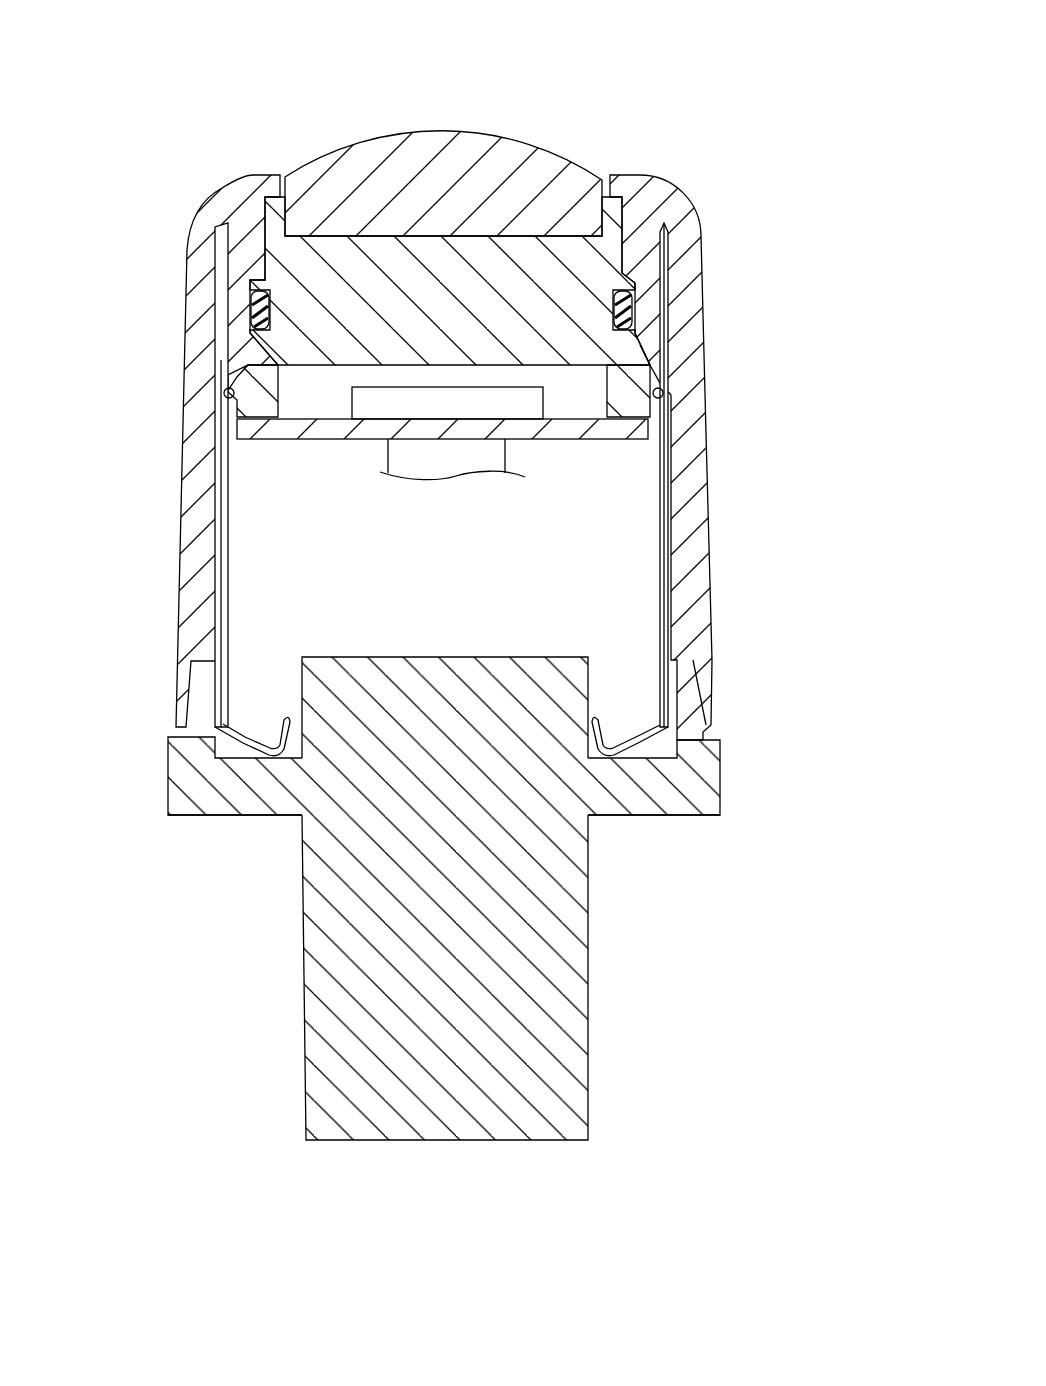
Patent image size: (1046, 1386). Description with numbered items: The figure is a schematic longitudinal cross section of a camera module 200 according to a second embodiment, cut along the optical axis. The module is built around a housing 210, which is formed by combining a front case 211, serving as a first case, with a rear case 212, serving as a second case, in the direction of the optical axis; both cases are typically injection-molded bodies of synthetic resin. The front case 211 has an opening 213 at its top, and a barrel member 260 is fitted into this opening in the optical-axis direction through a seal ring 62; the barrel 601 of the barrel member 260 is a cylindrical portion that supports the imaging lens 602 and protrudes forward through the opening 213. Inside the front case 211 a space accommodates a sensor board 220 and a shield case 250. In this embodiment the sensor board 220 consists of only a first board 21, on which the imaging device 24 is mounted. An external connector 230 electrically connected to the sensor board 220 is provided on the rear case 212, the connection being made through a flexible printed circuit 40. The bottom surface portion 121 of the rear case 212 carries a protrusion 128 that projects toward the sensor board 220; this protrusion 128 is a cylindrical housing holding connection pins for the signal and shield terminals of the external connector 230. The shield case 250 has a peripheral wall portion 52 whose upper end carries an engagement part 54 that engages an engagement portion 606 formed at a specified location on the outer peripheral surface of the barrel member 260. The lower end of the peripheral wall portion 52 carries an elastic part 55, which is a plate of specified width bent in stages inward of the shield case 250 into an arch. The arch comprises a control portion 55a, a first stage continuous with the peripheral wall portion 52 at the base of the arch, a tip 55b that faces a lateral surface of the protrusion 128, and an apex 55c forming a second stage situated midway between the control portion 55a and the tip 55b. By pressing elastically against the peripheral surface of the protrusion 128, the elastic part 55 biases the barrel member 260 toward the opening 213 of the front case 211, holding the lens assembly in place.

The camera module 200 is at (729, 106).
The housing 210 is at (76, 600).
The front case 211 is at (176, 630).
The rear case 212 is at (168, 777).
The opening 213 is at (637, 225).
The bottom surface portion 121 is at (253, 818).
The protrusion 128 is at (553, 656).
The external connector 230 is at (446, 1112).
The barrel member 260 is at (465, 82).
The barrel 601 is at (613, 257).
The imaging lens 602 is at (470, 148).
The engagement portion 606 is at (666, 362).
The seal ring 62 is at (246, 306).
The sensor board 220 is at (272, 60).
The first board 21 is at (332, 418).
The imaging device 24 is at (375, 392).
The flexible printed circuit 40 is at (452, 460).
The shield case 250 is at (858, 400).
The peripheral wall portion 52 is at (672, 486).
The engagement part 54 is at (664, 393).
The elastic part 55 is at (796, 610).
The control portion 55a is at (662, 727).
The tip 55b is at (600, 716).
The apex 55c is at (641, 775).